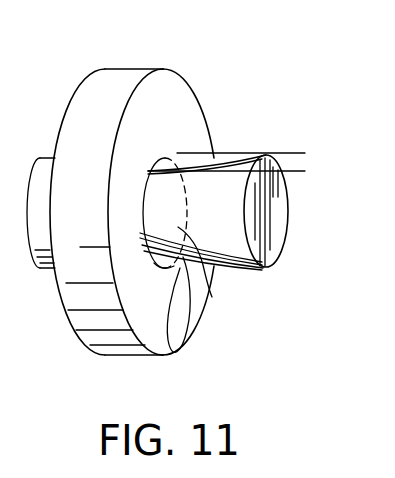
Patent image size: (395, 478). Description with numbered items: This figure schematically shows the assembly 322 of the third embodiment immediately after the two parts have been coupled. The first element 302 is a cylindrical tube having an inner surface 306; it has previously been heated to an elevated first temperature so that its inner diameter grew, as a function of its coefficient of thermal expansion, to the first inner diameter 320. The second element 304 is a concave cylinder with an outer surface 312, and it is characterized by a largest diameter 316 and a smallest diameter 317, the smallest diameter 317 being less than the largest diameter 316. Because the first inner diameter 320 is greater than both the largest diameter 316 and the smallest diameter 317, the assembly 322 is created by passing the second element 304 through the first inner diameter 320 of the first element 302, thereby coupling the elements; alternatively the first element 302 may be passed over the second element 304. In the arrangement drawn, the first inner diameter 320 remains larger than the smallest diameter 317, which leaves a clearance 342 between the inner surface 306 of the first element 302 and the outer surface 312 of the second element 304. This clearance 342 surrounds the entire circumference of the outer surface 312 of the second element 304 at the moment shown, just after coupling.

The first element 302 is at (106, 340).
The second element 304 is at (266, 373).
The inner surface 306 is at (181, 350).
The outer surface 312 is at (212, 297).
The largest diameter 316 is at (50, 373).
The smallest diameter 317 is at (155, 373).
The first inner diameter 320 is at (165, 388).
The assembly 322 is at (290, 80).
The clearance 342 is at (297, 100).